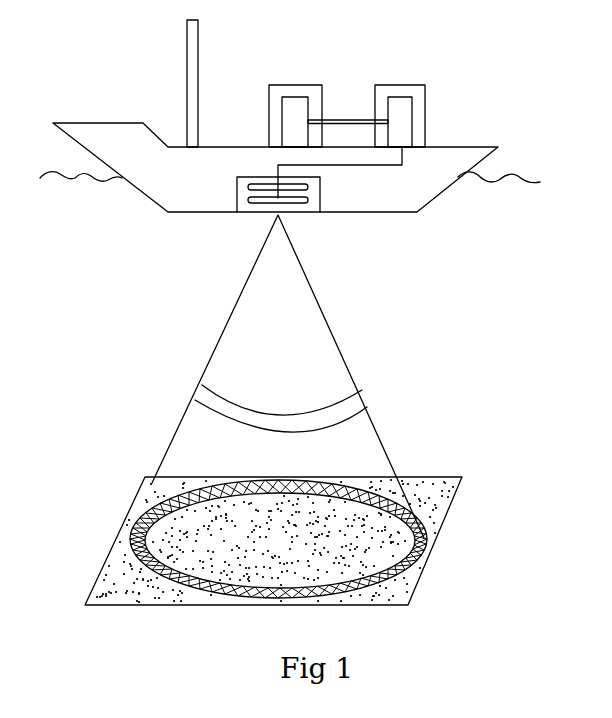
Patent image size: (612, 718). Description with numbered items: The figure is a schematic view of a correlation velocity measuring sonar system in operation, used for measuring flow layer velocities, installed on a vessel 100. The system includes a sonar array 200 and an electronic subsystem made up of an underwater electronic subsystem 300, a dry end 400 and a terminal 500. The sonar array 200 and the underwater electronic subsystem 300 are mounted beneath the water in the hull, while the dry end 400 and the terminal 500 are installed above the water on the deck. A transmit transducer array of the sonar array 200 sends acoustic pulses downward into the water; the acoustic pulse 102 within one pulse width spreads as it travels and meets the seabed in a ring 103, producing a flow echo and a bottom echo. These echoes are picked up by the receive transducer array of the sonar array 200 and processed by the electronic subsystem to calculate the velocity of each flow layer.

The vessel 100 is at (106, 120).
The sonar array 200 is at (250, 200).
The underwater electronic subsystem 300 is at (308, 187).
The dry end 400 is at (413, 110).
The terminal 500 is at (306, 110).
The acoustic pulse 102 is at (363, 402).
The ring 103 is at (427, 546).